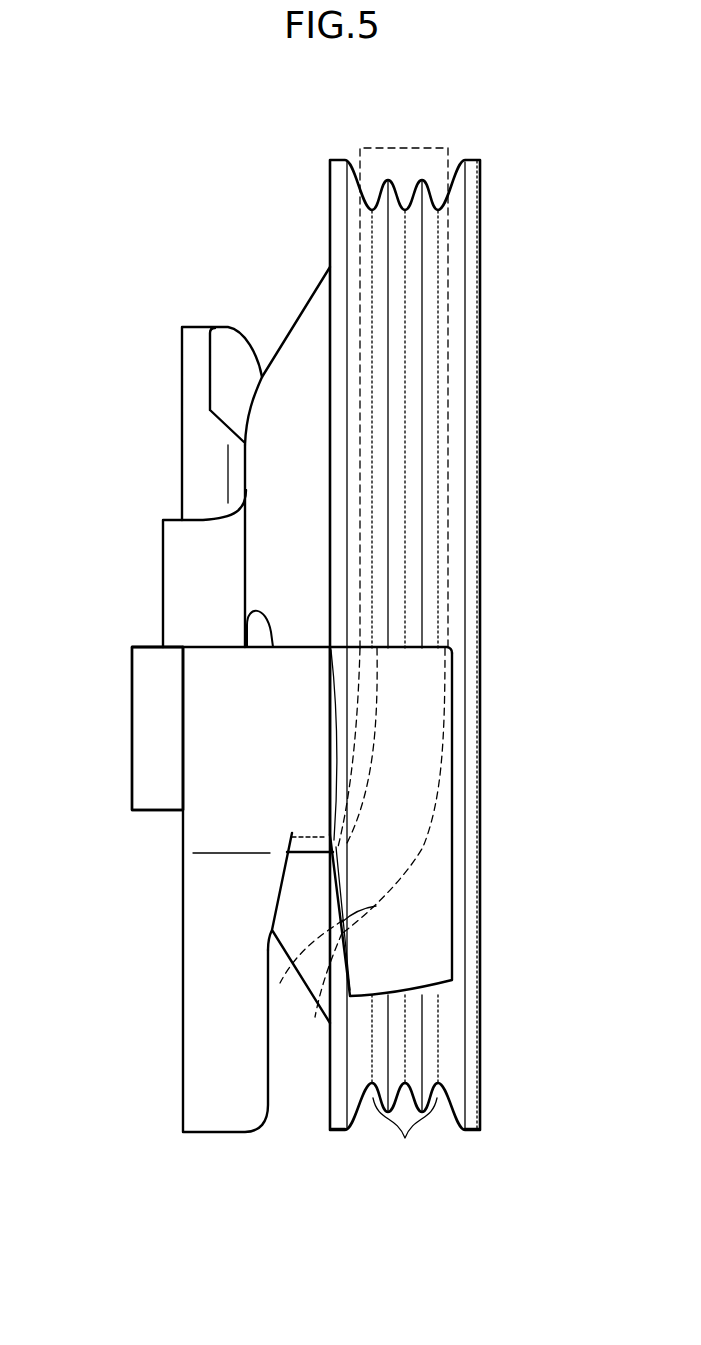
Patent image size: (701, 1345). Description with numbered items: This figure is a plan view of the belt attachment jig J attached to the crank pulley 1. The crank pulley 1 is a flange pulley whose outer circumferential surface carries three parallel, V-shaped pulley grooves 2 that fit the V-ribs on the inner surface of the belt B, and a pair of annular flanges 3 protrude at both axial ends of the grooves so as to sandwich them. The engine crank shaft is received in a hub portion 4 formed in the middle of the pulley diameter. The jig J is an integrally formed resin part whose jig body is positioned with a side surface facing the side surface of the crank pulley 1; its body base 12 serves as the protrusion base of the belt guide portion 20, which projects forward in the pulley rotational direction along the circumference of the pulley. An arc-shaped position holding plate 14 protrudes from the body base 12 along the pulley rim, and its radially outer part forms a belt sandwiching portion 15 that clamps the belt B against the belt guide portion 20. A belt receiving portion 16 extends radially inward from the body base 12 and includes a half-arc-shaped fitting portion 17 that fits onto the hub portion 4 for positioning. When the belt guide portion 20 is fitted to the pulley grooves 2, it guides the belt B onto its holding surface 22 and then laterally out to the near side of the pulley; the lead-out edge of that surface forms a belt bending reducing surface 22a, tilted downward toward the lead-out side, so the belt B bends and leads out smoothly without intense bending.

The crank pulley 1 is at (472, 163).
The belt B is at (410, 148).
The pulley grooves 2 is at (405, 1137).
The annular flanges 3 is at (343, 1127).
The hub portion 4 is at (180, 578).
The body base 12 is at (217, 673).
The position holding plate 14 is at (195, 447).
The belt sandwiching portion 15 is at (195, 876).
The belt receiving portion 16 is at (148, 724).
The fitting portion 17 is at (157, 728).
The belt guide portion 20 is at (425, 881).
The holding surface 22 is at (424, 750).
The belt bending reducing surface 22a is at (332, 832).
The belt attachment jig J is at (152, 985).